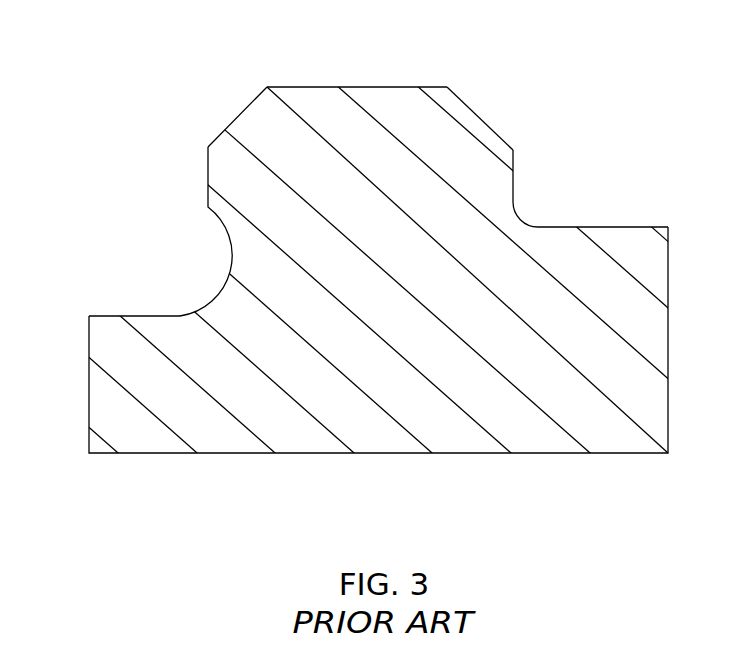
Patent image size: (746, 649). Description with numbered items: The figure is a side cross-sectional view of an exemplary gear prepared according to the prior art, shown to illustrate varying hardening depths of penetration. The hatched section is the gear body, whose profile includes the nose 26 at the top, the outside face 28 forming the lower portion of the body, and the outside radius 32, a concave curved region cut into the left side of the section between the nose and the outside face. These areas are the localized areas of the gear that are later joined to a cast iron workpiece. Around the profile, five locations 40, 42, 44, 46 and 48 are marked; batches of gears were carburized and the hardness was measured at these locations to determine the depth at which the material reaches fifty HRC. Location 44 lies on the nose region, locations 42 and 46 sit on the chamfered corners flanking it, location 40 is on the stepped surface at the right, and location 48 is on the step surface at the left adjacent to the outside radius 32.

The nose 26 is at (295, 92).
The location 44 is at (368, 100).
The location 46 is at (245, 120).
The location 42 is at (477, 127).
The location 40 is at (597, 237).
The outside face 28 is at (95, 320).
The location 48 is at (138, 318).
The outside radius 32 is at (227, 283).